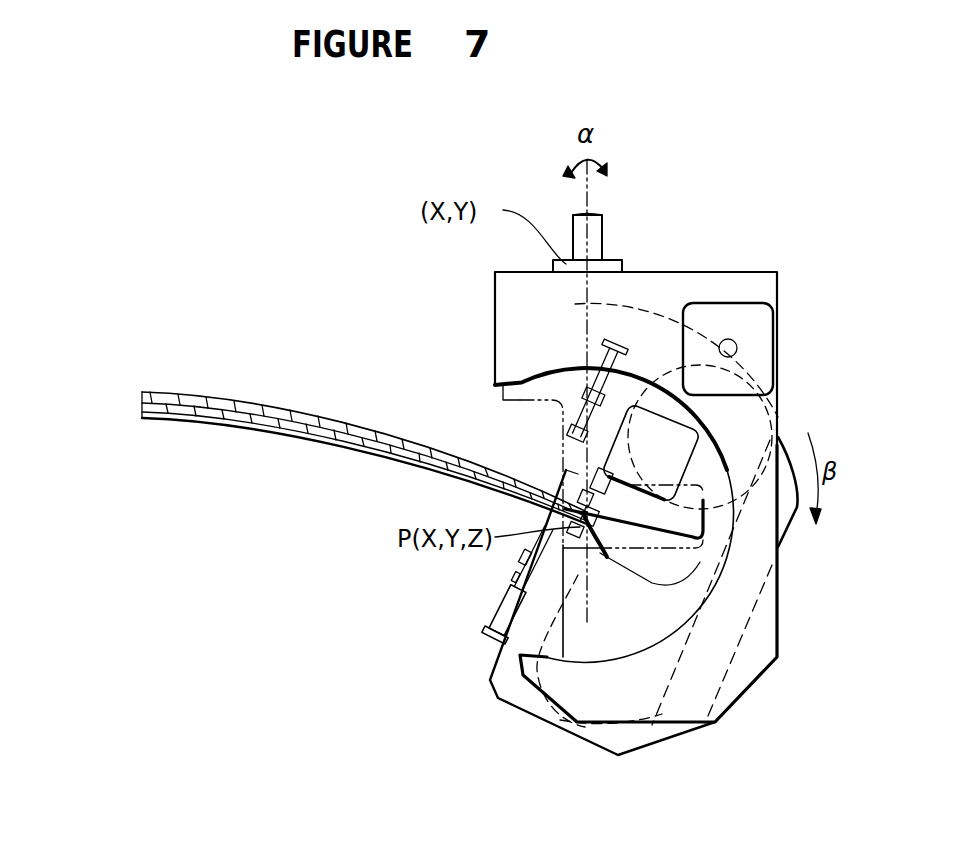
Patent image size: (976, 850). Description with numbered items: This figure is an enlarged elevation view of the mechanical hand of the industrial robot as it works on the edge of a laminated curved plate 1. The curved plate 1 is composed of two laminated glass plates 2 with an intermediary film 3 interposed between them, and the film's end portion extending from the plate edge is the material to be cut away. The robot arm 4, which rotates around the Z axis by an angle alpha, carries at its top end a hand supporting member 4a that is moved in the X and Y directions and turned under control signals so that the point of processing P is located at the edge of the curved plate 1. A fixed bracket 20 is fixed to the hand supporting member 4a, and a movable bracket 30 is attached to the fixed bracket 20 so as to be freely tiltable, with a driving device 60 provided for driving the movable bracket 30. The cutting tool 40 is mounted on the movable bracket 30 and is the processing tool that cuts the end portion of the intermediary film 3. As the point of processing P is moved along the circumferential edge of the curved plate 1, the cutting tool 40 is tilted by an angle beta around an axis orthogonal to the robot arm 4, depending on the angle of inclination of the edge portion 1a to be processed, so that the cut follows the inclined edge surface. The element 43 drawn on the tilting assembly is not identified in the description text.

The curved plate 1 is at (236, 394).
The edge portion to be processed 1a is at (563, 475).
The glass plate 2 is at (292, 416).
The intermediary film 3 is at (365, 436).
The robot arm 4 is at (595, 228).
The hand supporting member 4a is at (612, 263).
The fixed bracket 20 is at (712, 266).
The movable bracket 30 is at (512, 717).
The cutting tool 40 is at (742, 530).
The adjusting screw 43 is at (540, 607).
The driving device 60 is at (782, 317).